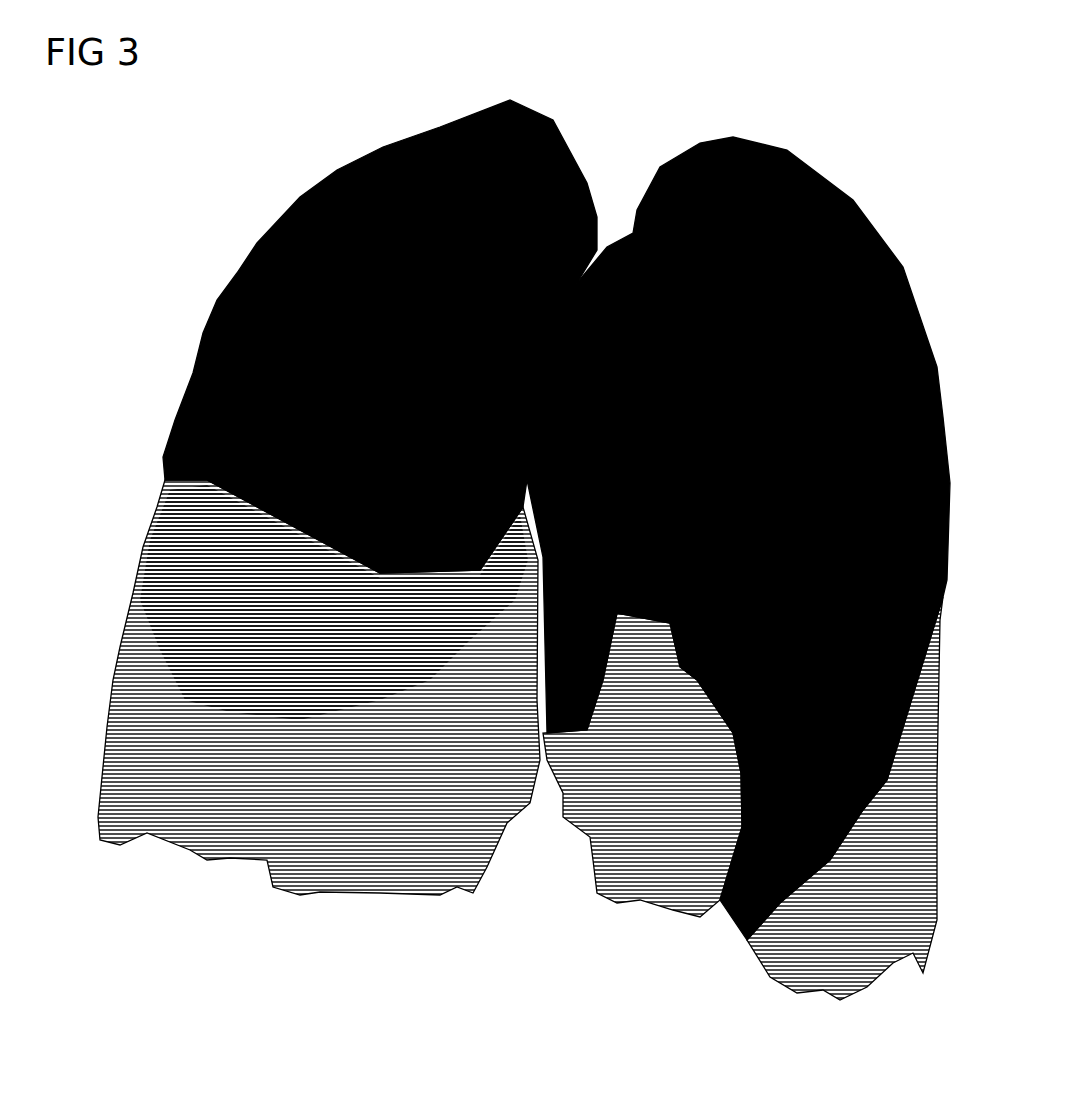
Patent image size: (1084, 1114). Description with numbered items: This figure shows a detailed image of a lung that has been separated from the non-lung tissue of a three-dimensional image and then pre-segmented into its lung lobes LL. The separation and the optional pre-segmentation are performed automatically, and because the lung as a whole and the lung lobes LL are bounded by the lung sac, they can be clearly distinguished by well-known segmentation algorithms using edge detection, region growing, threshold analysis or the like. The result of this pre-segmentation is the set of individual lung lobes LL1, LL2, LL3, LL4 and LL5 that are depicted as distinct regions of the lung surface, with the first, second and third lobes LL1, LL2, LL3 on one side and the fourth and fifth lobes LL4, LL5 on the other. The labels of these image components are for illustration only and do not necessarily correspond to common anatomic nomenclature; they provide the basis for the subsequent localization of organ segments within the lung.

The lung lobes LL is at (501, 566).
The lung lobe LL1 is at (268, 240).
The lung lobe LL2 is at (218, 580).
The lung lobe LL3 is at (140, 763).
The lung lobe LL4 is at (878, 250).
The lung lobe LL5 is at (860, 980).